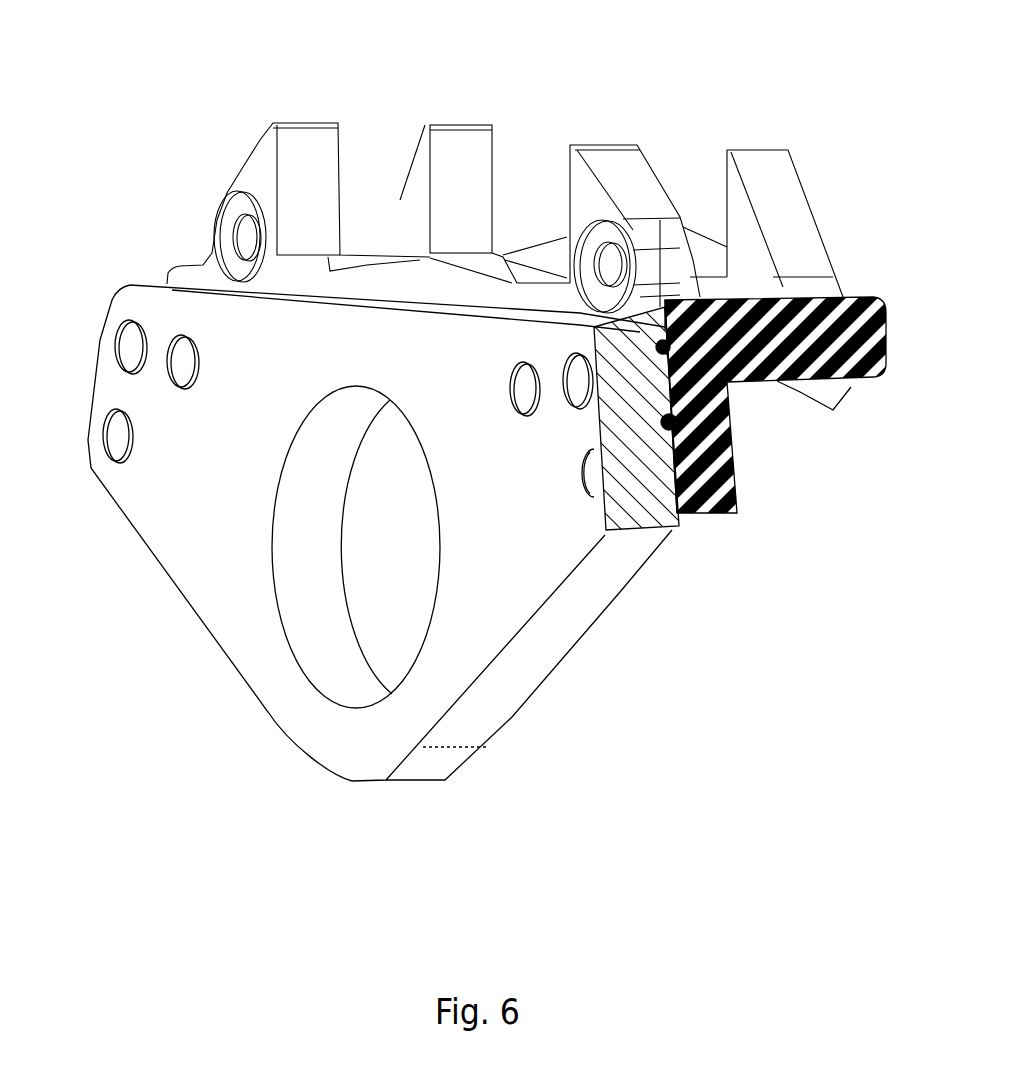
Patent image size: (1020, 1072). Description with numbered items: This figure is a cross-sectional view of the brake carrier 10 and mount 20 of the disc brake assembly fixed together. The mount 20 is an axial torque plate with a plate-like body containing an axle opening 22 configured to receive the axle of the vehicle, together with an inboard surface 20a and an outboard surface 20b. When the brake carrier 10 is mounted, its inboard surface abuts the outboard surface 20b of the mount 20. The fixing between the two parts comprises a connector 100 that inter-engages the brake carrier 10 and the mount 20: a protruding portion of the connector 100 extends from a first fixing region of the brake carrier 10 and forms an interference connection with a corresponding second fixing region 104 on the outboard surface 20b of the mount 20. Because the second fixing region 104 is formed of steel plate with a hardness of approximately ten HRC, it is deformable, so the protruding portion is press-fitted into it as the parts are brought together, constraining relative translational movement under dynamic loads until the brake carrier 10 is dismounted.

The brake carrier 10 is at (797, 365).
The mount 20 is at (498, 680).
The inboard surface 20a is at (177, 498).
The outboard surface 20b is at (674, 468).
The axle opening 22 is at (378, 591).
The connector 100 is at (665, 340).
The second fixing region 104 is at (669, 422).